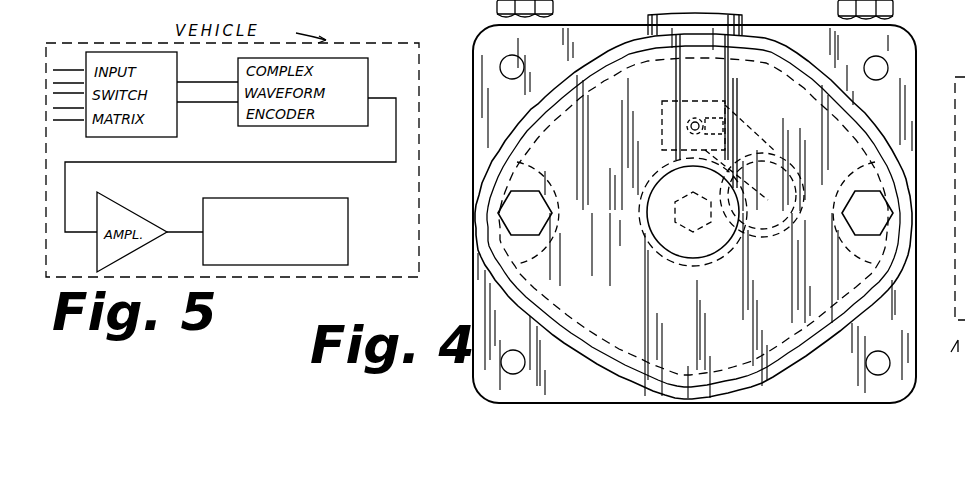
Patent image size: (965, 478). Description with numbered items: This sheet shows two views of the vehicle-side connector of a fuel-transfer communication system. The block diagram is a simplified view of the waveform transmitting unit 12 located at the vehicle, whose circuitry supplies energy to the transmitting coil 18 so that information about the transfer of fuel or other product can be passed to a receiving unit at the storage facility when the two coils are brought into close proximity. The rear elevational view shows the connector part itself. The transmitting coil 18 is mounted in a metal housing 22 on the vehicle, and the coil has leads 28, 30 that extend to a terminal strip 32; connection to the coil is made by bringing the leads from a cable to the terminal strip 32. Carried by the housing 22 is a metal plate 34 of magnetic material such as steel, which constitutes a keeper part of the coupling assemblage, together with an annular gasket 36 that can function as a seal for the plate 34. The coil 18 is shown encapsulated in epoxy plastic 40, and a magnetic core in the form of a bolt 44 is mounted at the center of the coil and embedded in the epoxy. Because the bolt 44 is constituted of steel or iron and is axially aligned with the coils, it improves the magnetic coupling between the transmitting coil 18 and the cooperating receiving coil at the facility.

In FIG. 5, the waveform transmitting unit 12 is at (380, 255).
In FIG. 5, the transmitting coil 18 is at (301, 257).
In FIG. 4, the metal housing 22 is at (868, 135).
In FIG. 4, the lead 28 is at (762, 128).
In FIG. 4, the lead 30 is at (762, 216).
In FIG. 4, the terminal strip 32 is at (673, 106).
In FIG. 4, the metal plate 34 is at (621, 3).
In FIG. 4, the annular gasket 36 is at (778, 0).
In FIG. 4, the epoxy plastic 40 is at (703, 250).
In FIG. 4, the bolt 44 is at (688, 226).